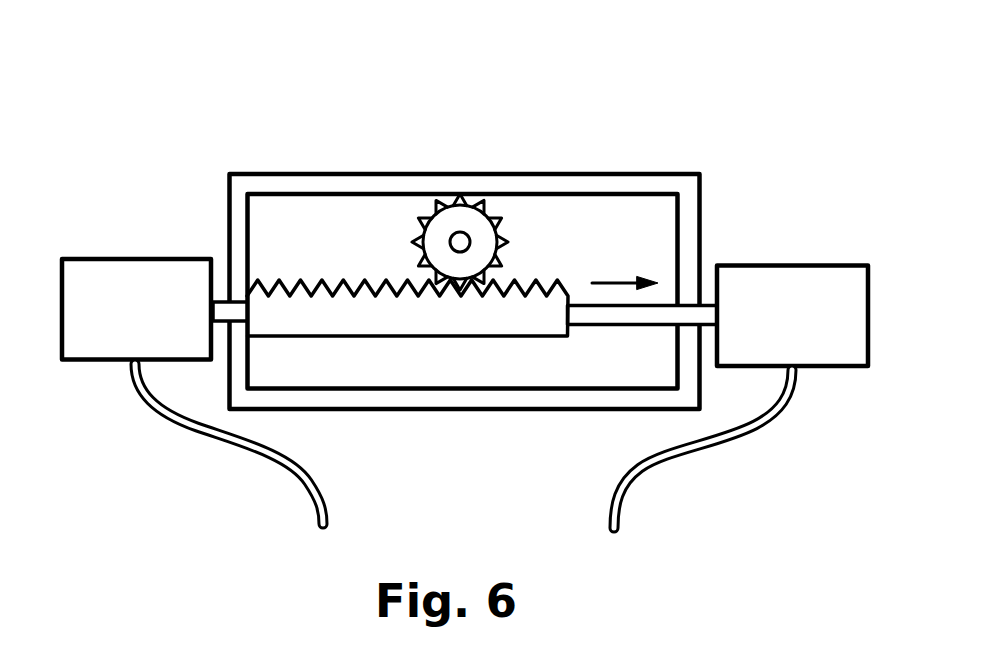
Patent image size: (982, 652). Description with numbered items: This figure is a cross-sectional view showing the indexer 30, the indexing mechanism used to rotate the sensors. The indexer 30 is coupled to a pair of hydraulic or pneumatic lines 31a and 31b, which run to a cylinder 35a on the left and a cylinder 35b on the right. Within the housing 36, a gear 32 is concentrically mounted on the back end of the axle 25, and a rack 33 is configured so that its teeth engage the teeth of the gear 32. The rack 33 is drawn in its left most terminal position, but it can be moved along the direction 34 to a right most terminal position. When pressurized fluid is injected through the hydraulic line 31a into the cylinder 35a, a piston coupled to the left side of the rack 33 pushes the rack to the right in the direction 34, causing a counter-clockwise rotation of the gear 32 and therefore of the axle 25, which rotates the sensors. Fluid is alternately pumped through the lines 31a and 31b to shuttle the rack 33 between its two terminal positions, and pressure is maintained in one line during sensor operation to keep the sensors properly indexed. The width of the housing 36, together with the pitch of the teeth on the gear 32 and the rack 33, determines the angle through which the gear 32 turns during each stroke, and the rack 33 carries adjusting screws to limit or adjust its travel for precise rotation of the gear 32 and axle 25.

The indexer 30 is at (465, 282).
The axle 25 is at (460, 242).
The gear 32 is at (475, 230).
The rack 33 is at (388, 327).
The direction 34 is at (622, 280).
The cylinder 35a is at (167, 321).
The cylinder 35b is at (763, 329).
The hydraulic line 31a is at (289, 463).
The hydraulic line 31b is at (675, 456).
The housing 36 is at (650, 403).